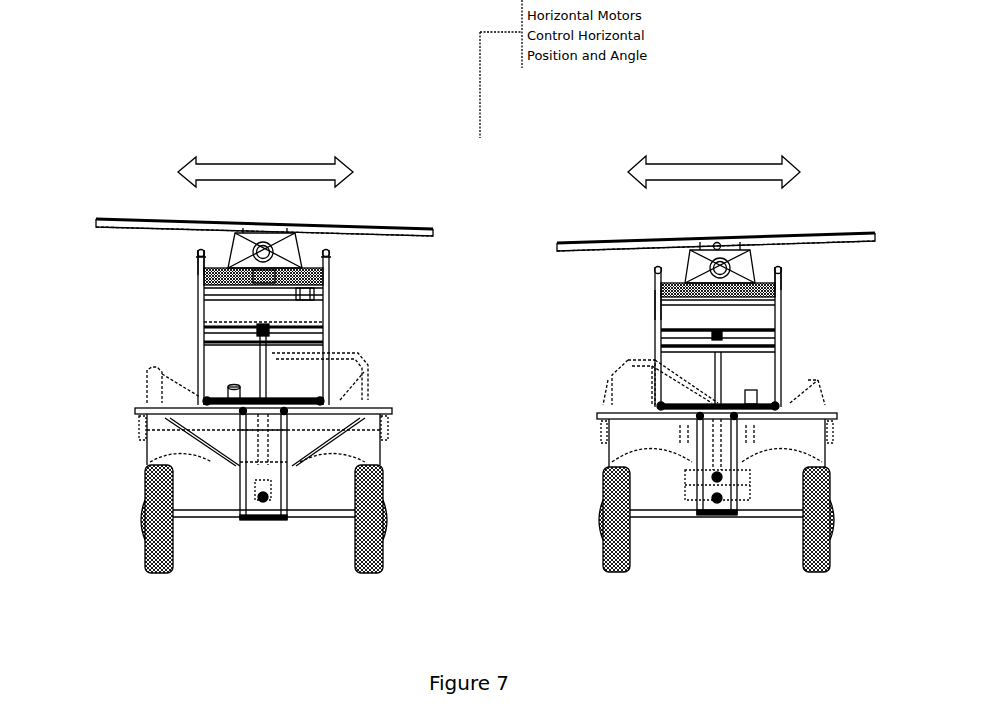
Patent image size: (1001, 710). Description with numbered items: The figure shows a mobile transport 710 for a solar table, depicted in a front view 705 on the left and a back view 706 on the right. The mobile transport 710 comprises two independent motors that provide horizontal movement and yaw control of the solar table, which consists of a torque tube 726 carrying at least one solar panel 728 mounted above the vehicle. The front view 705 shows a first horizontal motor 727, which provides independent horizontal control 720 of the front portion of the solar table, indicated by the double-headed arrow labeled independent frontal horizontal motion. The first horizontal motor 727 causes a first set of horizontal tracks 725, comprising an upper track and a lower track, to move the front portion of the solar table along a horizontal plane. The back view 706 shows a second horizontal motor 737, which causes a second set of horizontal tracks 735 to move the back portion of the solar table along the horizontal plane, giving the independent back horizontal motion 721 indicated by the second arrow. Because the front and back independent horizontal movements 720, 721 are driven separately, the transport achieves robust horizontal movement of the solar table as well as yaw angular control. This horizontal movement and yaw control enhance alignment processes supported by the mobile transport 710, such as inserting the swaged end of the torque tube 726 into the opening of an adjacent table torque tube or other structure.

The mobile transport 710 is at (70, 98).
The independent horizontal control 720 is at (265, 120).
The independent horizontal movement 721 is at (714, 124).
The front view 705 is at (263, 426).
The back view 706 is at (717, 433).
The first set of horizontal tracks 725 is at (198, 283).
The torque tube 726 is at (196, 258).
The first horizontal motor 727 is at (330, 294).
The solar panel 728 is at (395, 228).
The second set of horizontal tracks 735 is at (781, 293).
The second horizontal motor 737 is at (655, 300).